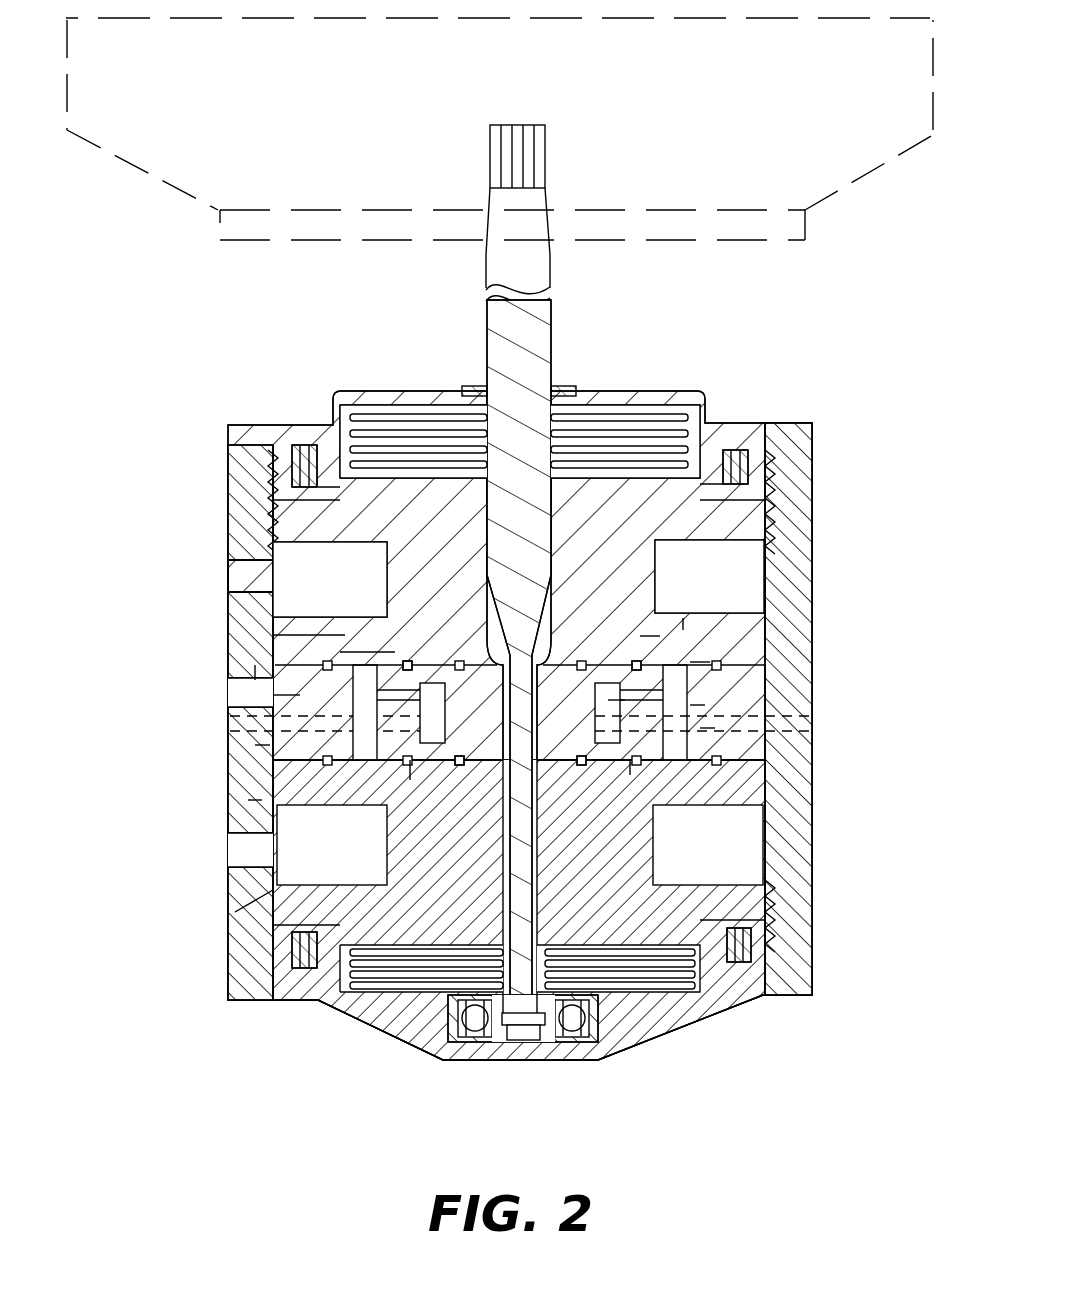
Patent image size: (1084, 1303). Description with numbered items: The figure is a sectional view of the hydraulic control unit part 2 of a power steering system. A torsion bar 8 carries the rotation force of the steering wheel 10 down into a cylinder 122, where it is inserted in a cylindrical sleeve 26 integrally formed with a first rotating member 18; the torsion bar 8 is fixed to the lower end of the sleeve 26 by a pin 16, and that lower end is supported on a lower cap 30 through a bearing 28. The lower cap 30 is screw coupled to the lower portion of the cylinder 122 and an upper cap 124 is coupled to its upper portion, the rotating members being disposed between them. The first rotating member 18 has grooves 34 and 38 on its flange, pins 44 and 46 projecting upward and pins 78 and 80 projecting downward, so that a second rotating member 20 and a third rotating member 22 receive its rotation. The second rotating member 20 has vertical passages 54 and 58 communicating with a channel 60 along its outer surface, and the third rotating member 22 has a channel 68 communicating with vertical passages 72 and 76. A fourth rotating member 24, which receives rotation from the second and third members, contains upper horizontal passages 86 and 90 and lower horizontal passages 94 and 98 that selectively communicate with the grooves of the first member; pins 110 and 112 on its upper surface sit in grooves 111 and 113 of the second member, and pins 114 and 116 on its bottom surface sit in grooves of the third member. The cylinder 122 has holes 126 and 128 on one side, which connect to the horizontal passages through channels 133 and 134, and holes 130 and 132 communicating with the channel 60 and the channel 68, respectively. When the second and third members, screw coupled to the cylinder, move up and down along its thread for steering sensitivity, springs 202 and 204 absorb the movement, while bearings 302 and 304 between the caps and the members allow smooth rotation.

The hydraulic control unit part 2 is at (730, 347).
The torsion bar 8 is at (530, 228).
The steering wheel 10 is at (870, 178).
The pin 16 is at (520, 1030).
The first rotating member 18 is at (549, 684).
The second rotating member 20 is at (644, 514).
The third rotating member 22 is at (667, 916).
The fourth rotating member 24 is at (693, 706).
The cylindrical sleeve 26 is at (467, 927).
The bearing 28 is at (460, 1030).
The lower cap 30 is at (630, 1012).
The groove 34 is at (250, 805).
The groove 38 is at (610, 703).
The pin 44 is at (444, 668).
The pin 46 is at (608, 688).
The vertical passage 54 is at (685, 622).
The vertical passage 58 is at (345, 634).
The channel 60 is at (738, 588).
The channel 68 is at (236, 912).
The vertical passage 72 is at (680, 789).
The vertical passage 76 is at (357, 782).
The pin 78 is at (466, 764).
The pin 80 is at (581, 765).
The upper horizontal passage 86 is at (700, 665).
The upper horizontal passage 90 is at (258, 672).
The lower horizontal passage 94 is at (707, 729).
The lower horizontal passage 98 is at (265, 742).
The pin 110 is at (395, 652).
The groove 111 is at (407, 660).
The pin 112 is at (642, 640).
The groove 113 is at (627, 661).
The pin 114 is at (418, 780).
The pin 116 is at (629, 770).
The cylinder 122 is at (230, 463).
The upper cap 124 is at (773, 427).
The hole 126 is at (240, 704).
The hole 128 is at (240, 729).
The hole 130 is at (240, 568).
The hole 132 is at (240, 852).
The channel 133 is at (285, 695).
The channel 134 is at (292, 758).
The spring 202 is at (400, 433).
The spring 204 is at (395, 985).
The bearing 302 is at (305, 452).
The bearing 304 is at (290, 970).